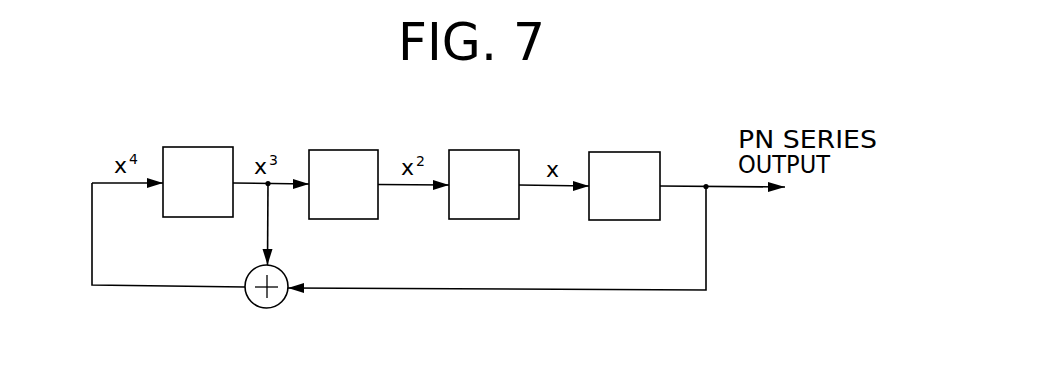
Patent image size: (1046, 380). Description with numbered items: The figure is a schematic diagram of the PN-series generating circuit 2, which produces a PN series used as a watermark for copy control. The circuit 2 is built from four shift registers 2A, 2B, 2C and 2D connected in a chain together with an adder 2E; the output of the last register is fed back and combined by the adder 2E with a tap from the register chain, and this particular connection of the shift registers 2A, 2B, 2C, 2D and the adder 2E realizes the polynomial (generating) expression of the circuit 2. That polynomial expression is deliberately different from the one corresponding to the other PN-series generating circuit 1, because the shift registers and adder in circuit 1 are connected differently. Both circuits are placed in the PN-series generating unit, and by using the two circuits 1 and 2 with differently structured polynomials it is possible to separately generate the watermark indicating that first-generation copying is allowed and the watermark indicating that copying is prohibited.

The PN-series generating circuit 2 is at (690, 110).
The shift register 2A is at (197, 147).
The shift register 2B is at (343, 150).
The shift register 2C is at (483, 150).
The shift register 2D is at (617, 152).
The adder 2E is at (247, 273).
The PN-series generating circuit 1 is at (722, 174).